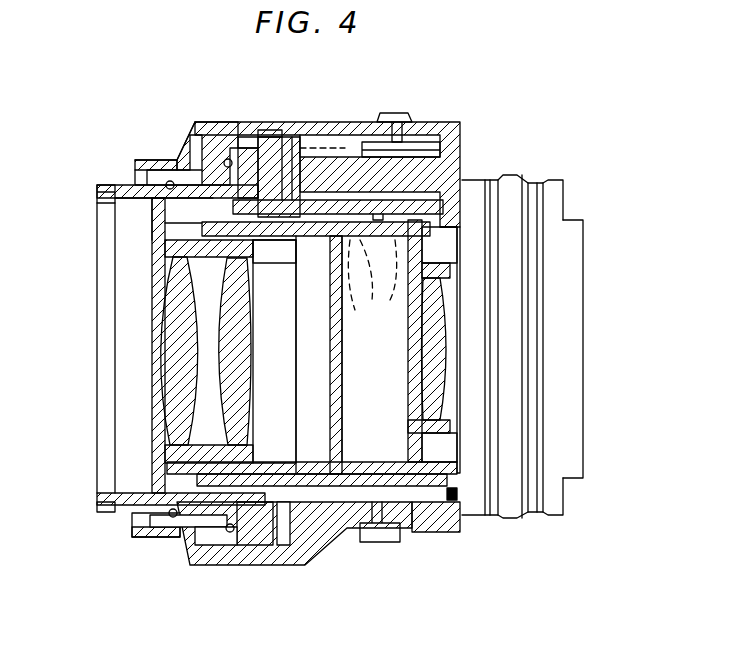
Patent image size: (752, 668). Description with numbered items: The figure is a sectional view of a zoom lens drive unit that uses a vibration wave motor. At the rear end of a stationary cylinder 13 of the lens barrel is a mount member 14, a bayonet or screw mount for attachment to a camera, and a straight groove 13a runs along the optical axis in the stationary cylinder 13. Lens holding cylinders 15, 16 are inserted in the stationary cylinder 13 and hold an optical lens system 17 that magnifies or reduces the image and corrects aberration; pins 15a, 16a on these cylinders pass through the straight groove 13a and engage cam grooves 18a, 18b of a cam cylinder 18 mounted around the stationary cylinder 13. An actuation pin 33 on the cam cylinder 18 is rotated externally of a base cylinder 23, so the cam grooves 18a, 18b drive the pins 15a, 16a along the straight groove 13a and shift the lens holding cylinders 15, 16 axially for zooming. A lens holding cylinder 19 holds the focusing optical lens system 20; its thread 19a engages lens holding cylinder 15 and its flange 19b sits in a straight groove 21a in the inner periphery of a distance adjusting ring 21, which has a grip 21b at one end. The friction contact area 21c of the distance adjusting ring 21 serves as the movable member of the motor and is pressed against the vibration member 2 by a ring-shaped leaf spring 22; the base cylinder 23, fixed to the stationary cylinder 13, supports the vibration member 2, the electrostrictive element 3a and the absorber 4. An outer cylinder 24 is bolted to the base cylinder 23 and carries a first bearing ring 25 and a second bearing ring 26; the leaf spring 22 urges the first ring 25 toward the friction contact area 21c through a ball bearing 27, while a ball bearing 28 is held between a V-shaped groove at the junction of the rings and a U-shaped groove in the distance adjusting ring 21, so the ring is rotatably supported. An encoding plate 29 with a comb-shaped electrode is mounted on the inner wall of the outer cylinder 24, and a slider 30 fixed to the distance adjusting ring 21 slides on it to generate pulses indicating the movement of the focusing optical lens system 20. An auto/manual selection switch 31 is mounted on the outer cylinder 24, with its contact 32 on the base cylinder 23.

The vibration member 2 is at (270, 152).
The electrostrictive element 3a is at (300, 150).
The absorber 4 is at (328, 148).
The stationary cylinder 13 is at (439, 252).
The straight groove 13a is at (420, 207).
The mount member 14 is at (577, 228).
The lens holding cylinder 15 is at (266, 237).
The pin 15a is at (323, 228).
The lens holding cylinder 16 is at (376, 468).
The pin 16a is at (358, 236).
The optical lens system 17 is at (440, 302).
The cam cylinder 18 is at (440, 205).
The cam groove 18a is at (368, 292).
The cam groove 18b is at (376, 276).
The lens holding cylinder 19 is at (253, 443).
The thread 19a is at (256, 264).
The flange 19b is at (158, 222).
The focusing optical lens system 20 is at (162, 368).
The distance adjusting ring 21 is at (127, 197).
The straight groove 21a is at (135, 205).
The grip 21b is at (100, 514).
The friction contact area 21c is at (255, 520).
The ring-shaped leaf spring 22 is at (198, 158).
The base cylinder 23 is at (455, 140).
The outer cylinder 24 is at (300, 566).
The first bearing ring 25 is at (215, 545).
The second bearing ring 26 is at (150, 537).
The ball bearing 27 is at (232, 534).
The ball bearing 28 is at (175, 520).
The encoding plate 29 is at (265, 132).
The slider 30 is at (247, 138).
The auto/manual selection switch 31 is at (396, 118).
The contact 32 is at (405, 150).
The actuation pin 33 is at (380, 543).